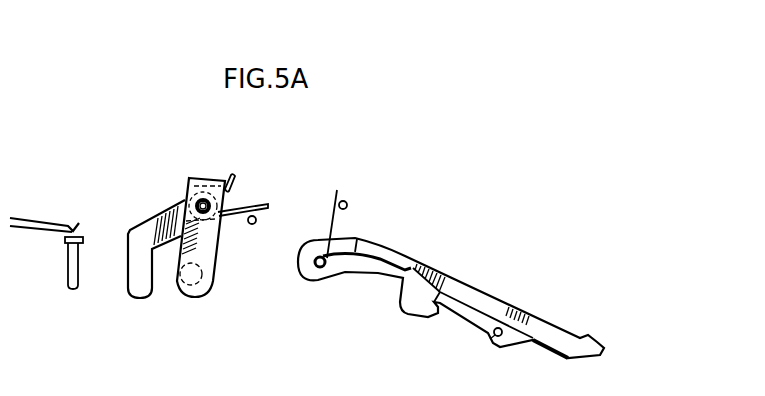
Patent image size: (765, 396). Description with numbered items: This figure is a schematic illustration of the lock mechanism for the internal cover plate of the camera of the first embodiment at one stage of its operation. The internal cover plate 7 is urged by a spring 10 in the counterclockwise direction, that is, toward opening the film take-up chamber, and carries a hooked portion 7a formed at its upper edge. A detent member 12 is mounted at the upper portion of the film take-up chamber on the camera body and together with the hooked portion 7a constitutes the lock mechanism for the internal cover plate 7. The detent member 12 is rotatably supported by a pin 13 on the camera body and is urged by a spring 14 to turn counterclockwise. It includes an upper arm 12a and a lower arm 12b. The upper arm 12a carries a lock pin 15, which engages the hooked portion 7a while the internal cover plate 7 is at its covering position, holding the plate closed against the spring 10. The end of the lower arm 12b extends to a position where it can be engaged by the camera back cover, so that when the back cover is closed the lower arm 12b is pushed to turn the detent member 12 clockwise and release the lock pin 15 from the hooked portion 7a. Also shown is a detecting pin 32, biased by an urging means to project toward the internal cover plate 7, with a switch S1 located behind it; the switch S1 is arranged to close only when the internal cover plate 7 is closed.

The switch S1 is at (25, 217).
The detecting pin 32 is at (66, 279).
The detent member 12 is at (180, 190).
The upper arm 12a is at (215, 247).
The lower arm 12b is at (138, 233).
The pin 13 is at (232, 197).
The spring 14 is at (268, 204).
The lock pin 15 is at (212, 288).
The spring 10 is at (335, 222).
The internal cover plate 7 is at (497, 306).
The hooked portion 7a is at (413, 307).